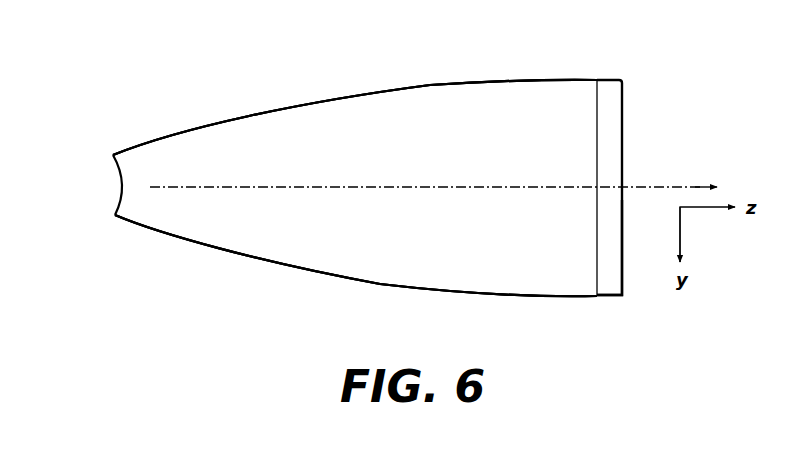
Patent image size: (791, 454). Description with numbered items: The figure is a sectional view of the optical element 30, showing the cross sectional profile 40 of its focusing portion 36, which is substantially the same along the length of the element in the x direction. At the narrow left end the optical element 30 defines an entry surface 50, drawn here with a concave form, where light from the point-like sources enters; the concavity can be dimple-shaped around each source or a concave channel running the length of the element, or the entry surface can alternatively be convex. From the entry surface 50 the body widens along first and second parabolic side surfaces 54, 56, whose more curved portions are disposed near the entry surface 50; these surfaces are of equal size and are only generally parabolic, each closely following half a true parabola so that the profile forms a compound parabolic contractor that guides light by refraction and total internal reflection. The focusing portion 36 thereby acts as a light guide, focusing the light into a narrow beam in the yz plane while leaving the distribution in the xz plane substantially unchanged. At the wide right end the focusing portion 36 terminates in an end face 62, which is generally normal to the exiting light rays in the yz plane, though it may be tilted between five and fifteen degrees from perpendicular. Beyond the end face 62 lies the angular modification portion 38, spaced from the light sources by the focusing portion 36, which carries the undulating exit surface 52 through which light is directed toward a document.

The optical element 30 is at (148, 75).
The focusing portion 36 is at (428, 272).
The angular modification portion 38 is at (615, 272).
The cross sectional profile 40 is at (360, 107).
The entry surface 50 is at (122, 182).
The exit surface 52 is at (625, 93).
The first parabolic side surface 54 is at (228, 258).
The second parabolic side surface 56 is at (223, 115).
The end face 62 is at (595, 92).